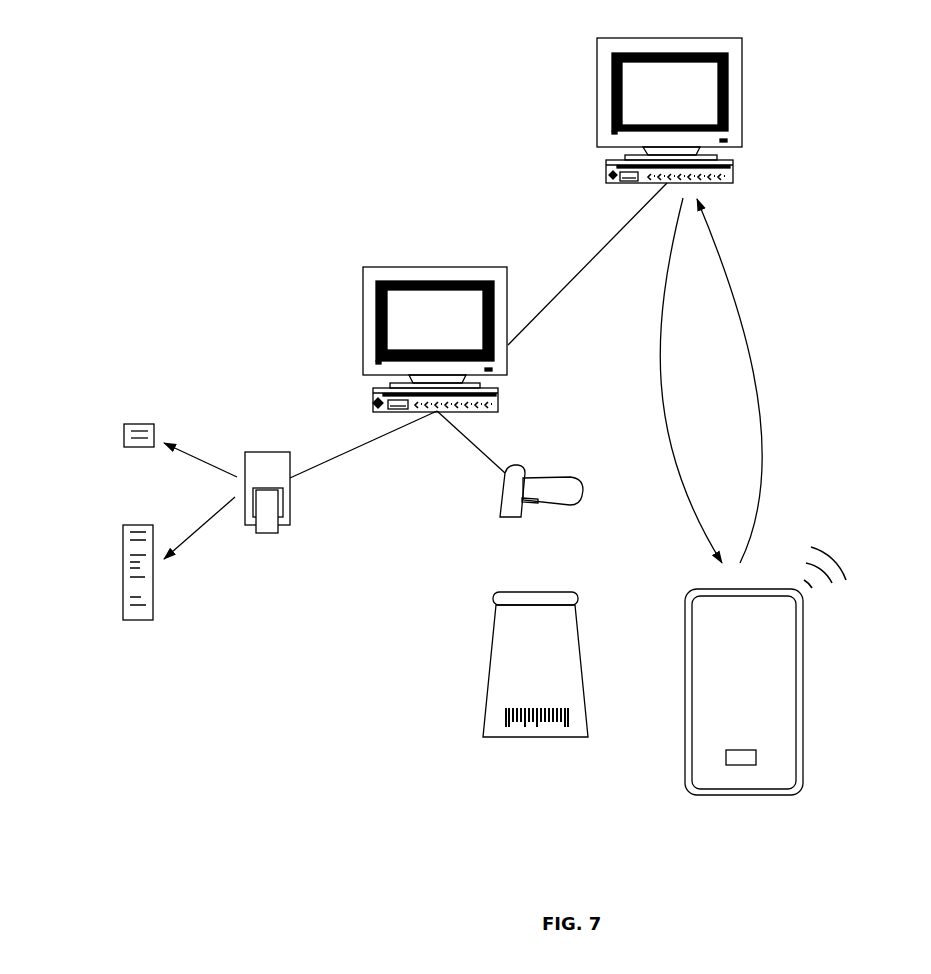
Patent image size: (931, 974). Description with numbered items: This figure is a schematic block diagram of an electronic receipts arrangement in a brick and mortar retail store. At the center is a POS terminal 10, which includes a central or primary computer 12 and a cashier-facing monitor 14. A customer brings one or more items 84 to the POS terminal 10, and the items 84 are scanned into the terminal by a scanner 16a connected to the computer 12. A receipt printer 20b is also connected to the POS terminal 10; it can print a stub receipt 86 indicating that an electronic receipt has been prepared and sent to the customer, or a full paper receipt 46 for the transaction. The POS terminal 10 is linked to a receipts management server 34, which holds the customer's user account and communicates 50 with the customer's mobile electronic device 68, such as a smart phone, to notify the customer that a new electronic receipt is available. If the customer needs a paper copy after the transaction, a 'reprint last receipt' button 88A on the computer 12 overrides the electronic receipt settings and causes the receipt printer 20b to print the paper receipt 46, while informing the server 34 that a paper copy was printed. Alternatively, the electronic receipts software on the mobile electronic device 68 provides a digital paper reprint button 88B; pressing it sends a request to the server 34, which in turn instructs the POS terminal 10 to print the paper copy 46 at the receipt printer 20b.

The receipts management server 34 is at (577, 37).
The communication 50 is at (742, 252).
The POS terminal 10 is at (388, 253).
The monitor 14 is at (348, 295).
The central or primary computer 12 is at (515, 386).
The reprint last receipt button 88A is at (375, 402).
The receipt printer 20b is at (260, 468).
The stub receipt 86 is at (124, 440).
The paper receipt 46 is at (123, 540).
The scanner 16a is at (552, 492).
The items 84 is at (516, 665).
The mobile electronic device 68 is at (733, 723).
The paper reprint button 88B is at (740, 758).